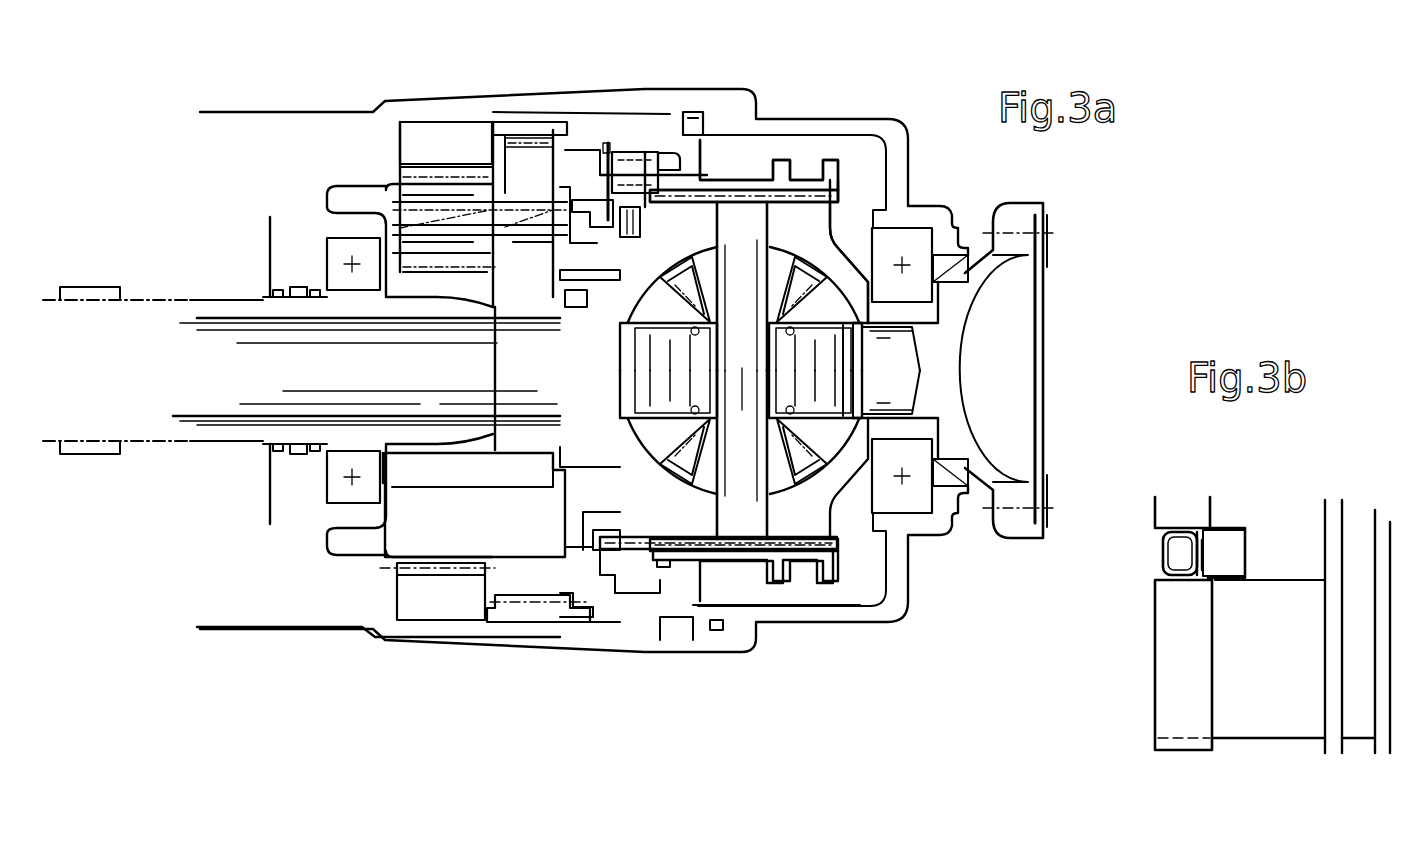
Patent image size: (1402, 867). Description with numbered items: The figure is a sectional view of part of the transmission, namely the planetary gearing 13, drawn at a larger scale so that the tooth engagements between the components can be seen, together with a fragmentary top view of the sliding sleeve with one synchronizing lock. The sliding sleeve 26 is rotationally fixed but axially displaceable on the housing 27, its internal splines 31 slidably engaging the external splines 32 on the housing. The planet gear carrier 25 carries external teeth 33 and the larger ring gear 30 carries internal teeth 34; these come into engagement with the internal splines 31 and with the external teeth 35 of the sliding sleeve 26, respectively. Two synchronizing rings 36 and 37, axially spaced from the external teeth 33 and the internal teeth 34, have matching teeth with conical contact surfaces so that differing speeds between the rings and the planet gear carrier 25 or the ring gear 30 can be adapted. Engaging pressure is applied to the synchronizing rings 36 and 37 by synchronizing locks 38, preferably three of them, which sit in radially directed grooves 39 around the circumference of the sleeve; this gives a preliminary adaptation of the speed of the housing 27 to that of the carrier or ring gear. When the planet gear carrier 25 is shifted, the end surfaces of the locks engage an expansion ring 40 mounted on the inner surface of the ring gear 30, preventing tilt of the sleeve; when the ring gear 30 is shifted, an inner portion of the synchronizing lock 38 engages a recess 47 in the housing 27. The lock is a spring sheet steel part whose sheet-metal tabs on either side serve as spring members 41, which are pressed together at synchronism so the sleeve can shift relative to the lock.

In FIG. 3A, the planetary gearing 13 is at (482, 642).
In FIG. 3A, the planet gear carrier 25 is at (513, 213).
In FIG. 3A, the sliding sleeve 26 is at (788, 185).
In FIG. 3B, the sliding sleeve 26 is at (1273, 602).
In FIG. 3A, the housing 27 is at (820, 240).
In FIG. 3A, the larger ring gear 30 is at (507, 137).
In FIG. 3A, the internal splines 31 is at (838, 197).
In FIG. 3A, the external splines 32 is at (817, 196).
In FIG. 3A, the external teeth 33 is at (580, 203).
In FIG. 3A, the internal teeth 34 is at (692, 135).
In FIG. 3A, the external teeth 35 is at (600, 200).
In FIG. 3A, the synchronizing ring 36 is at (597, 205).
In FIG. 3A, the synchronizing ring 37 is at (680, 165).
In FIG. 3A, the synchronizing lock 38 is at (634, 167).
In FIG. 3B, the synchronizing lock 38 is at (1180, 543).
In FIG. 3B, the groove 39 is at (1230, 547).
In FIG. 3A, the expansion ring 40 is at (610, 173).
In FIG. 3A, the spring members 41 is at (648, 163).
In FIG. 3B, the spring members 41 is at (1198, 532).
In FIG. 3A, the recess 47 is at (652, 220).